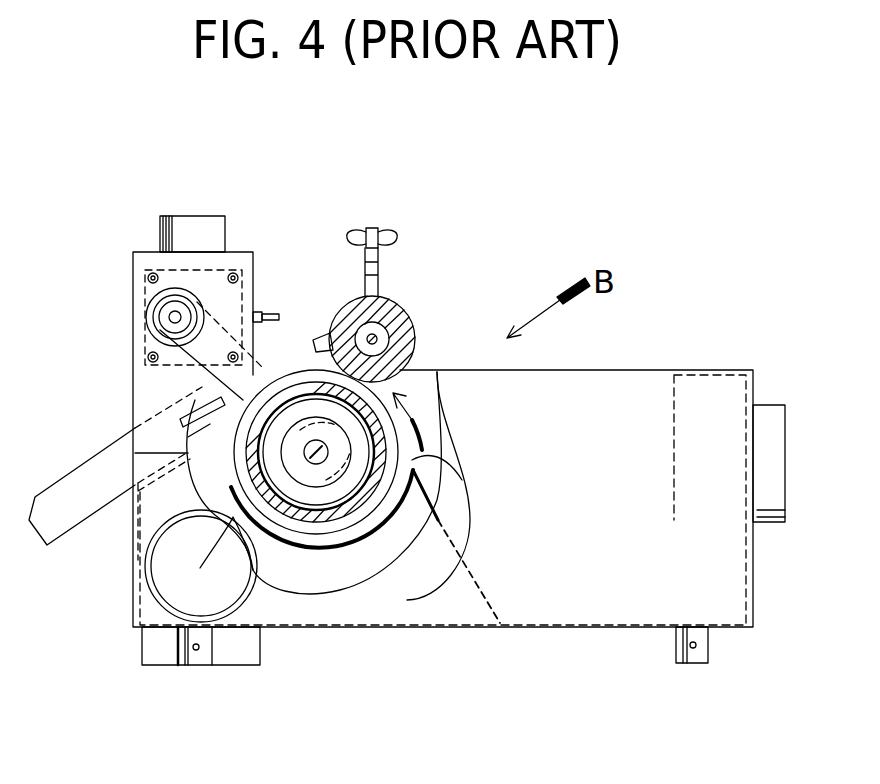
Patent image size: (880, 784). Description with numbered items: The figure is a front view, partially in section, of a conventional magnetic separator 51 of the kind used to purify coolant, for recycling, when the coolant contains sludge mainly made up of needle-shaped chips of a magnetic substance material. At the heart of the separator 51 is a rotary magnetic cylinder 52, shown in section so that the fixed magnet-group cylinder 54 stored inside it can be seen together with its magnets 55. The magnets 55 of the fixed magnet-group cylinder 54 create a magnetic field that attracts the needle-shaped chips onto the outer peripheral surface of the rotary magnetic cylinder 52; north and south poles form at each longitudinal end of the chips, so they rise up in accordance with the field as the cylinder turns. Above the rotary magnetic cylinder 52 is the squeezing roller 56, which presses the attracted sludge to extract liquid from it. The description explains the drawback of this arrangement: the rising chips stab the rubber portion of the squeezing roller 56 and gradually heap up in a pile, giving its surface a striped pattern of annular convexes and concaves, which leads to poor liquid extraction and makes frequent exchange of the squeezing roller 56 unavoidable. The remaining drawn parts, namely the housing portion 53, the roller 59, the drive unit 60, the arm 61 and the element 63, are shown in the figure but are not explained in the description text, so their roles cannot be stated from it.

The magnetic separator 51 is at (615, 645).
The rotary magnetic cylinder 52 is at (426, 368).
The housing cover 53 is at (232, 535).
The fixed magnet-group cylinder 54 is at (347, 543).
The magnets 55 is at (283, 512).
The squeezing roller 56 is at (397, 318).
The roller 59 is at (218, 535).
The motor 60 is at (210, 232).
The lever arm 61 is at (187, 400).
The guide wire 63 is at (466, 565).